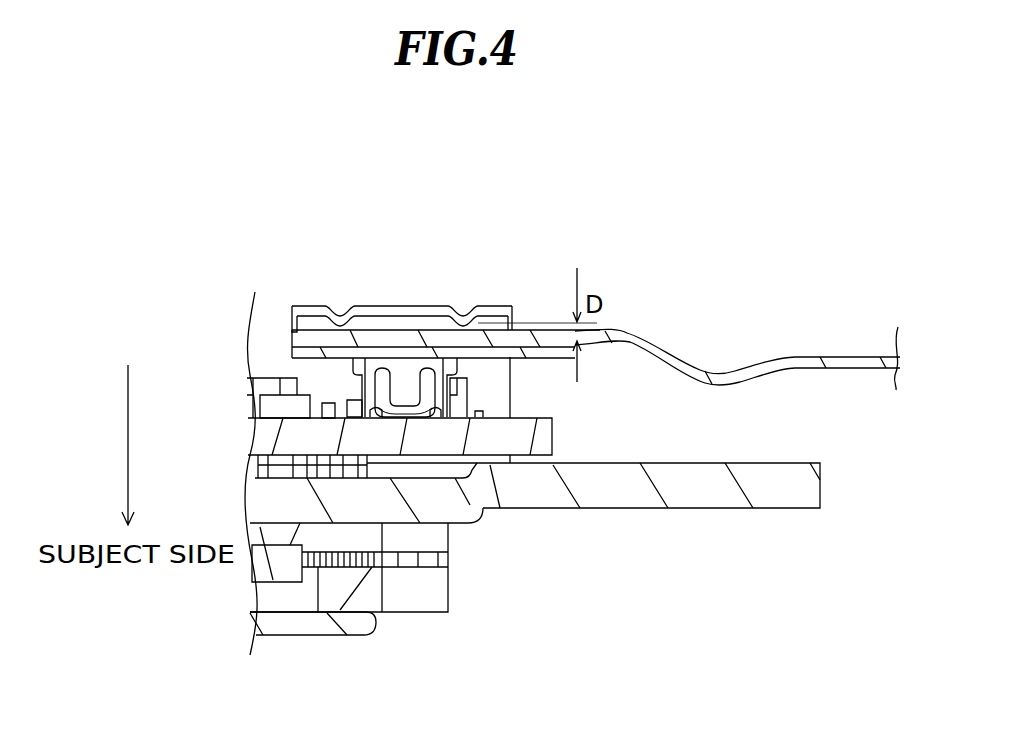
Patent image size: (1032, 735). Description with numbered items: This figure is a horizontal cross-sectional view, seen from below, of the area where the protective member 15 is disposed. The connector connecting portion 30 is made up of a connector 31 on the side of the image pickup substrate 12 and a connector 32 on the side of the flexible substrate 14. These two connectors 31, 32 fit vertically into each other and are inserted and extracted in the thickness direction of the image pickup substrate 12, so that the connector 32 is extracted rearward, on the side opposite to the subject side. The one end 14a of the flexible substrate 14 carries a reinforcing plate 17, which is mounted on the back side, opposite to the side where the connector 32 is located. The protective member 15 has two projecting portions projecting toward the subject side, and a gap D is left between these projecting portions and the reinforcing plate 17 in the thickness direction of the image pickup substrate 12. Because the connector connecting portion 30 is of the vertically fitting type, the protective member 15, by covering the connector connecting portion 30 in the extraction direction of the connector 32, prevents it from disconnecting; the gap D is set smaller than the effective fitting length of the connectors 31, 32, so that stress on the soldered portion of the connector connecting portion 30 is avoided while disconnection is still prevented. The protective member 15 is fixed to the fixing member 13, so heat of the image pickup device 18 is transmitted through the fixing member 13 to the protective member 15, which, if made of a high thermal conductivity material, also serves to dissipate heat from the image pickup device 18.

The image pickup substrate 12 is at (552, 435).
The fixing member 13 is at (712, 508).
The flexible substrate 14 is at (643, 333).
The one end of the flexible substrate 14a is at (292, 348).
The protective member 15 is at (511, 310).
The reinforcing plate 17 is at (292, 333).
The image pickup device 18 is at (322, 635).
The connector connecting portion 30 is at (522, 380).
The connector 31 is at (380, 382).
The connector 32 is at (410, 400).